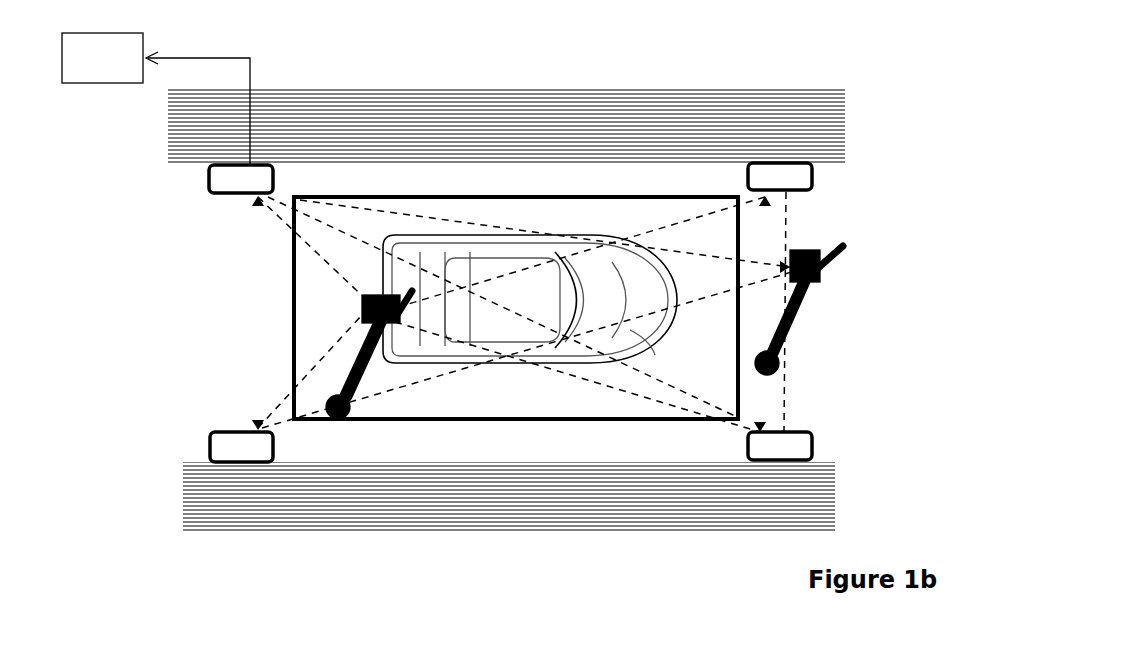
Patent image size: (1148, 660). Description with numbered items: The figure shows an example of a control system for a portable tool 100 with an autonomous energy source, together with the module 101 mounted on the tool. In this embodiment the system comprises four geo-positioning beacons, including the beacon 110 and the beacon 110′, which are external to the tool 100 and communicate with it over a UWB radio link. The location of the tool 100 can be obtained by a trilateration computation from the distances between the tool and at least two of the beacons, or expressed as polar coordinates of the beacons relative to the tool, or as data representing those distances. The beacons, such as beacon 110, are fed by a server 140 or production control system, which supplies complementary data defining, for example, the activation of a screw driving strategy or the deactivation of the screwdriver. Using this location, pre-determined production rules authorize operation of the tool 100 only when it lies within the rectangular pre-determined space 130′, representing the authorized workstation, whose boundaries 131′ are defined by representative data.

The server 140 is at (156, 99).
The geo-positioning beacon 110 is at (258, 166).
The geo-positioning beacon 110′ is at (778, 164).
The pre-determined space 130′ is at (320, 298).
The boundary 131′ is at (293, 320).
The portable tool 100 is at (368, 400).
The module 101 is at (825, 285).